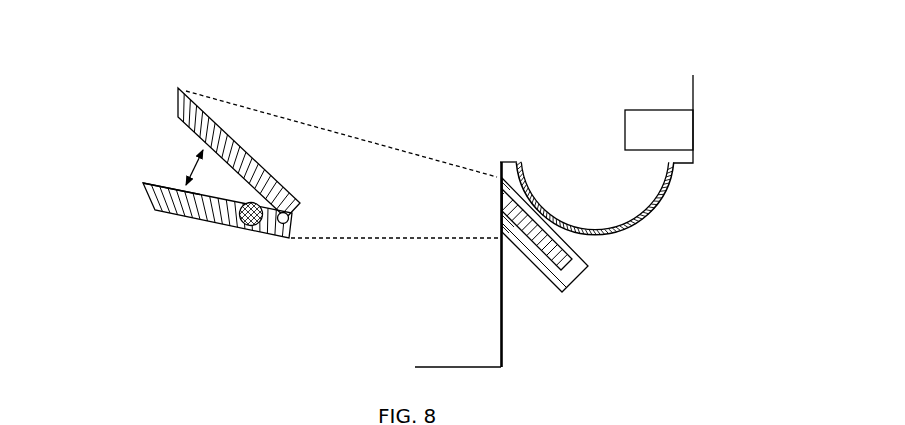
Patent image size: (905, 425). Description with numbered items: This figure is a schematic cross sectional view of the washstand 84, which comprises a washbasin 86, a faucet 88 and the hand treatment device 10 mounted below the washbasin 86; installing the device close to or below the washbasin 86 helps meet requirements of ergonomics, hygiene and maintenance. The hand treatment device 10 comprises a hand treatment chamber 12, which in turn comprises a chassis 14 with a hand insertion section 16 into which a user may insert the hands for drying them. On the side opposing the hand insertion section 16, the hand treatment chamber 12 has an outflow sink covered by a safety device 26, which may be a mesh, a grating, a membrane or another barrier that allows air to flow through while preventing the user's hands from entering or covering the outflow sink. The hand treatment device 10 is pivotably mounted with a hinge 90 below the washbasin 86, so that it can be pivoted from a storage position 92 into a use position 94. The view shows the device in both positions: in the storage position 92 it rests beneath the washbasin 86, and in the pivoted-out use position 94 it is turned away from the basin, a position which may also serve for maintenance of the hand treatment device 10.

The hand treatment device 10 is at (214, 90).
The hand treatment chamber 12 is at (149, 222).
The chassis 14 is at (203, 218).
The hand insertion section 16 is at (149, 176).
The safety device 26 is at (248, 227).
The washstand 84 is at (535, 102).
The washbasin 86 is at (648, 213).
The faucet 88 is at (675, 130).
The hinge 90 is at (293, 235).
The storage position 92 is at (489, 217).
The use position 94 is at (155, 133).